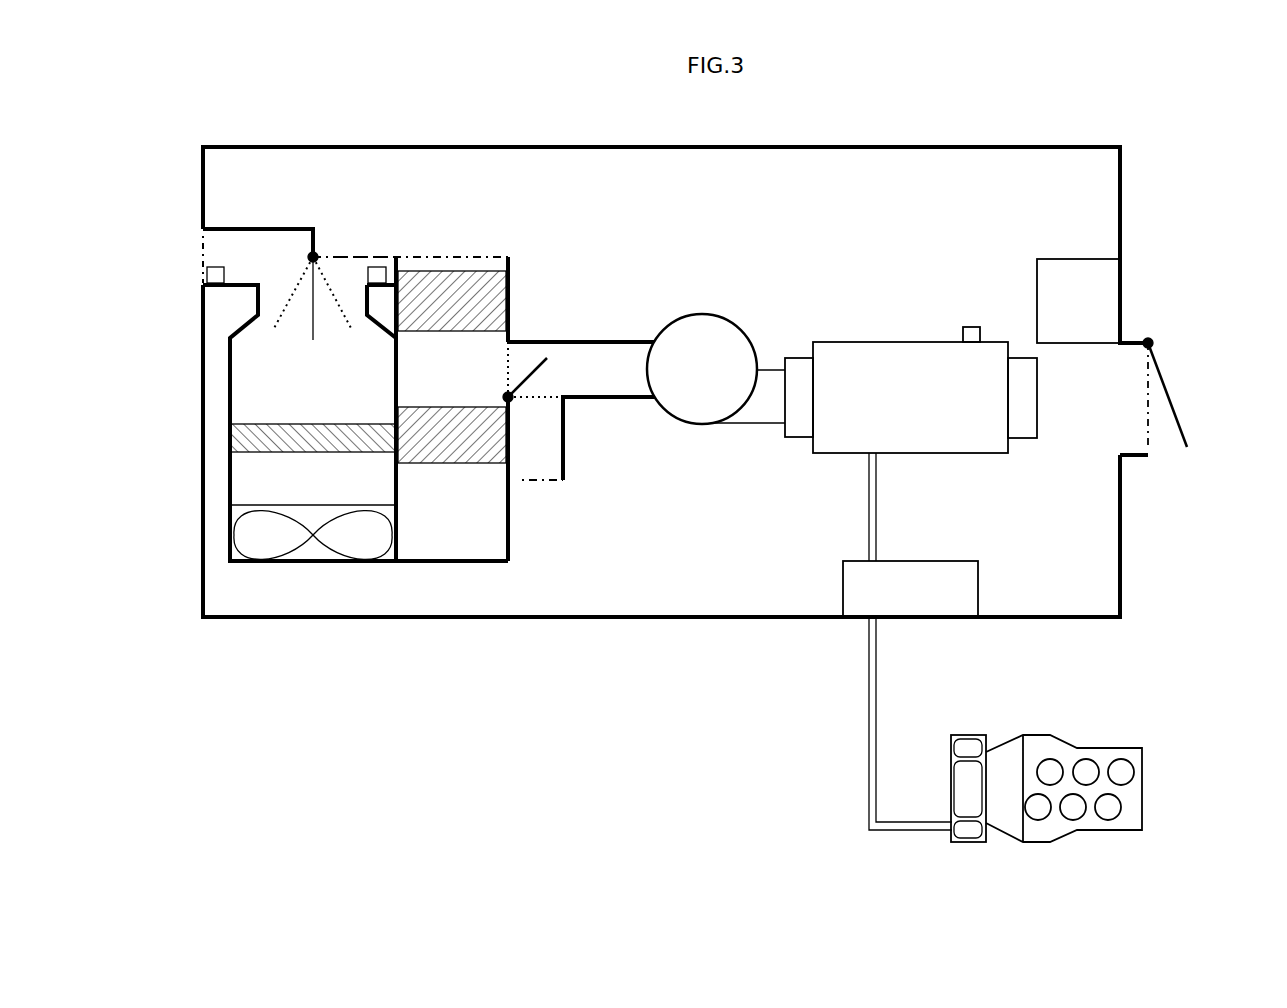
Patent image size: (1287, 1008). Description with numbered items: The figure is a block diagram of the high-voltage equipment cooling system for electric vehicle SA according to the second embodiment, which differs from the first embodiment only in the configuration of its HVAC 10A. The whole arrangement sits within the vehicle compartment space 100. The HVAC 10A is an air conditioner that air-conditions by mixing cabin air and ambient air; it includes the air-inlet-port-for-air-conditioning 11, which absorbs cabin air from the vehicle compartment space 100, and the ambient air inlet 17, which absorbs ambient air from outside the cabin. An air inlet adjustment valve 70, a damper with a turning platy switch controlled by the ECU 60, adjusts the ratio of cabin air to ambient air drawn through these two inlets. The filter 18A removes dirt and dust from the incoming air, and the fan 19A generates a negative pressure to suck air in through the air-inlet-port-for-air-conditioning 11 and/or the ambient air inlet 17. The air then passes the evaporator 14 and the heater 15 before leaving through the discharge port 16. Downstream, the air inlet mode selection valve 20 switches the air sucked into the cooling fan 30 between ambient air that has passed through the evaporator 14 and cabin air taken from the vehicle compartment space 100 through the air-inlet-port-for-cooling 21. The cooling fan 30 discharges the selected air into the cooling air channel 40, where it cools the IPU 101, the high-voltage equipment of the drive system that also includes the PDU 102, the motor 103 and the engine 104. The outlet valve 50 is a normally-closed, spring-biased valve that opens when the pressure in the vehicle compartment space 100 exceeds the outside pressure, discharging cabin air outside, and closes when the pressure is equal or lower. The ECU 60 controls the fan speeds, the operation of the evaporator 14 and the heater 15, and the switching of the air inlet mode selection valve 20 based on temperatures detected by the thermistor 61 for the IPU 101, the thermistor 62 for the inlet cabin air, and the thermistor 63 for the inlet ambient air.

The vehicle compartment space 100 is at (672, 147).
The HVAC 10A is at (455, 565).
The air-inlet-port-for-air-conditioning 11 is at (345, 256).
The evaporator 14 is at (480, 463).
The heater 15 is at (508, 268).
The discharge port 16 is at (475, 256).
The ambient air inlet 17 is at (203, 270).
The filter 18A is at (270, 424).
The fan 19A is at (270, 505).
The air inlet mode selection valve 20 is at (535, 365).
The air-inlet-port-for-cooling 21 is at (542, 482).
The cooling fan 30 is at (700, 313).
The cooling air channel 40 is at (805, 358).
The outlet valve 50 is at (1168, 388).
The ECU 60 is at (1068, 259).
The thermistor 61 is at (970, 327).
The thermistor 62 is at (380, 267).
The thermistor 63 is at (216, 267).
The air inlet adjustment valve 70 is at (313, 322).
The IPU 101 is at (900, 342).
The PDU 102 is at (933, 561).
The motor 103 is at (963, 735).
The engine 104 is at (1077, 750).
The high-voltage equipment cooling system for electric vehicle SA is at (1150, 203).